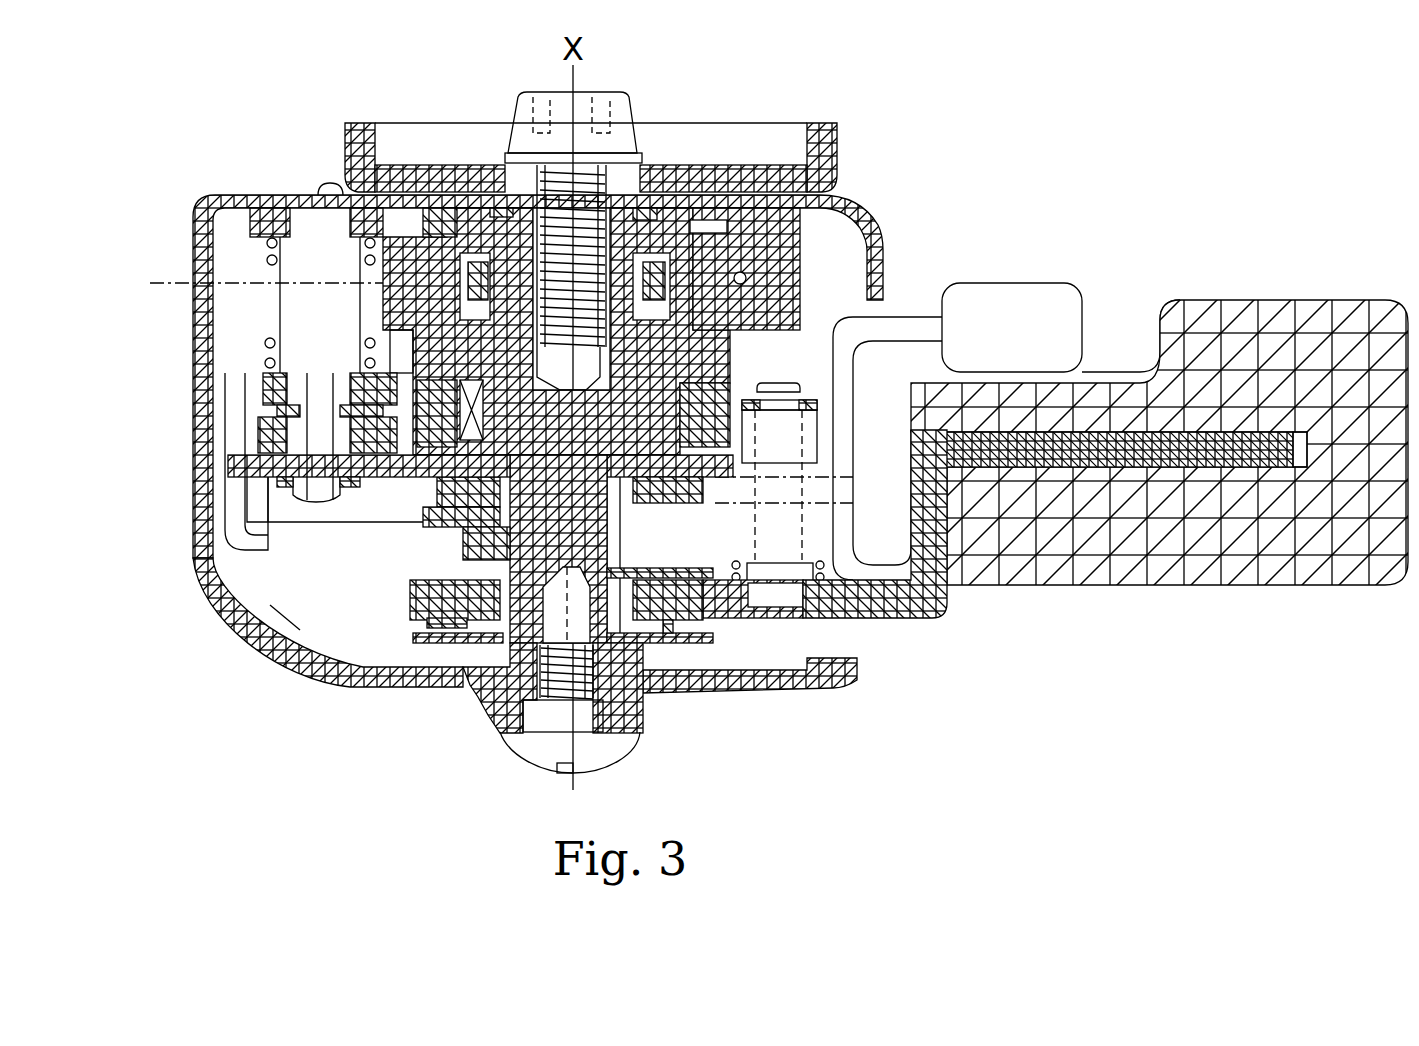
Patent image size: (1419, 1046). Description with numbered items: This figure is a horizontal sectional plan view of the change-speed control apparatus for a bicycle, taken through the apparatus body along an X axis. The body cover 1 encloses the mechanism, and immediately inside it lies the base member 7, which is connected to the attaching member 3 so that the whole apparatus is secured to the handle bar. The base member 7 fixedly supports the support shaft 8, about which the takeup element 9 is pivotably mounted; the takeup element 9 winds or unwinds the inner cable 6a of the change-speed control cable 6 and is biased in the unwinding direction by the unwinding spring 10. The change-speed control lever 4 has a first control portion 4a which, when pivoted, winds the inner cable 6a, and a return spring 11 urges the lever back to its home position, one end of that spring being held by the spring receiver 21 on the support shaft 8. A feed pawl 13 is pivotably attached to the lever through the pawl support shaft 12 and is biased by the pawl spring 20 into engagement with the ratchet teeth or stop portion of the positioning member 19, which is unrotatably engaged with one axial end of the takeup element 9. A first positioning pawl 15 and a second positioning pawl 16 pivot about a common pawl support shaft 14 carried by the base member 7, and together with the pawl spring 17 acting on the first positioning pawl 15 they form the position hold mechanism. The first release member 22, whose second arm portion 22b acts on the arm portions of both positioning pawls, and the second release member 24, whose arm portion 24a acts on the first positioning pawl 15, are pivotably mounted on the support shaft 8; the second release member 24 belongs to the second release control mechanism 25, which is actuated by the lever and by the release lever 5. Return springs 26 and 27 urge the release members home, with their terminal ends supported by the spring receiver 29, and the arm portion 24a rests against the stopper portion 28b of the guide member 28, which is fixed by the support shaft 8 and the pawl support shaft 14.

The body cover 1 is at (247, 630).
The attaching member 3 is at (347, 128).
The change-speed control lever 4 is at (943, 598).
The first control portion 4a is at (1295, 587).
The release lever 5 is at (1032, 285).
The change-speed control cable 6 is at (172, 283).
The inner cable 6a is at (748, 280).
The base member 7 is at (263, 217).
The support shaft 8 is at (463, 667).
The takeup element 9 is at (747, 247).
The unwinding spring 10 is at (455, 268).
The return spring 11 is at (432, 623).
The pawl support shaft 12 is at (803, 393).
The feed pawl 13 is at (812, 433).
The pawl support shaft 14 is at (290, 330).
The first positioning pawl 15 is at (263, 385).
The second positioning pawl 16 is at (267, 432).
The pawl spring 17 is at (267, 367).
The positioning member 19 is at (733, 393).
The pawl spring 20 is at (880, 618).
The spring receiver 21 is at (707, 653).
The first release member 22 is at (707, 483).
The second arm portion 22b is at (325, 372).
The second release member 24 is at (373, 540).
The arm portion 24a is at (228, 485).
The second release control mechanism 25 is at (225, 548).
The return spring 26 is at (305, 590).
The return spring 27 is at (420, 558).
The guide member 28 is at (733, 462).
The stopper portion 28b is at (343, 537).
The spring receiver 29 is at (707, 617).